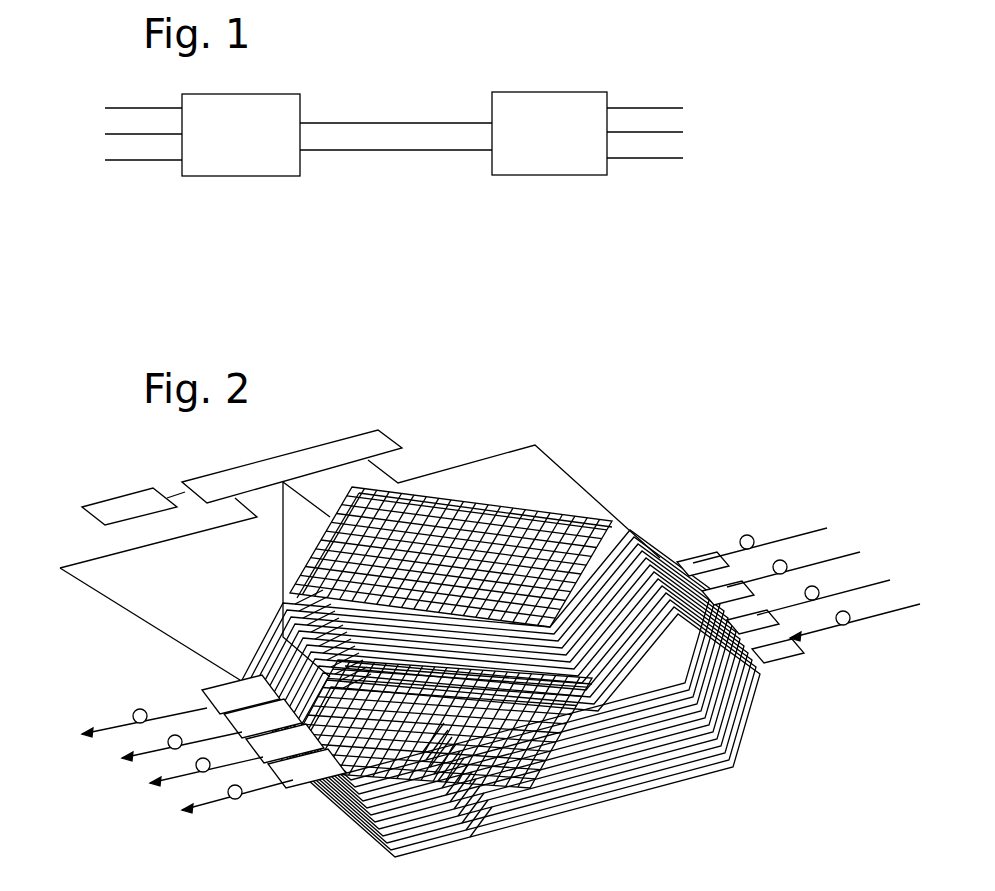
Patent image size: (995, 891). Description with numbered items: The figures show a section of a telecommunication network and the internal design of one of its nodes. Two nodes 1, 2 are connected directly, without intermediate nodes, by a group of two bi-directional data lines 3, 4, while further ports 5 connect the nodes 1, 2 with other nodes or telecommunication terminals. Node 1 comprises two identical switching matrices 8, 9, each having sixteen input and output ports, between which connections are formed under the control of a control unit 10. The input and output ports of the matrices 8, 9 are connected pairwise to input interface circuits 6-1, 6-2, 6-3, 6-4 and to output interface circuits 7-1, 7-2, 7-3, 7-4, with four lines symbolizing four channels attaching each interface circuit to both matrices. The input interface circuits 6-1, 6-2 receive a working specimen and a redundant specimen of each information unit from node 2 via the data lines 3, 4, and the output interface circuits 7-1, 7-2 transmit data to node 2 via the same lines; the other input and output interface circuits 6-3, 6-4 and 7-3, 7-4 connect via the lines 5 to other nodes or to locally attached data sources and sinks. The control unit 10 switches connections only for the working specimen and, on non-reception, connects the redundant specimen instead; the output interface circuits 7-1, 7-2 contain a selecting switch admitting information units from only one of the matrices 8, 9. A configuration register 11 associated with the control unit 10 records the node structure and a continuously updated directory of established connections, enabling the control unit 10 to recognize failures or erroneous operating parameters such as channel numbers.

In FIG. 1, the node 1 is at (225, 163).
In FIG. 1, the node 2 is at (540, 107).
In FIG. 1, the bi-directional data line 3 is at (420, 122).
In FIG. 2, the bi-directional data line 3 is at (200, 822).
In FIG. 1, the bi-directional data line 4 is at (390, 152).
In FIG. 2, the bi-directional data line 4 is at (168, 795).
In FIG. 1, the further ports 5 is at (160, 133).
In FIG. 2, the further ports 5 is at (104, 745).
In FIG. 2, the input interface circuit 6-1 is at (785, 661).
In FIG. 2, the input interface circuit 6-2 is at (784, 620).
In FIG. 2, the input interface circuit 6-3 is at (752, 591).
In FIG. 2, the input interface circuit 6-4 is at (697, 560).
In FIG. 2, the output interface circuit 7-1 is at (307, 768).
In FIG. 2, the output interface circuit 7-2 is at (285, 743).
In FIG. 2, the output interface circuit 7-3 is at (263, 718).
In FIG. 2, the output interface circuit 7-4 is at (241, 694).
In FIG. 2, the switching matrix 8 is at (432, 494).
In FIG. 2, the switching matrix 9 is at (562, 664).
In FIG. 2, the control unit 10 is at (298, 458).
In FIG. 2, the configuration register 11 is at (110, 504).